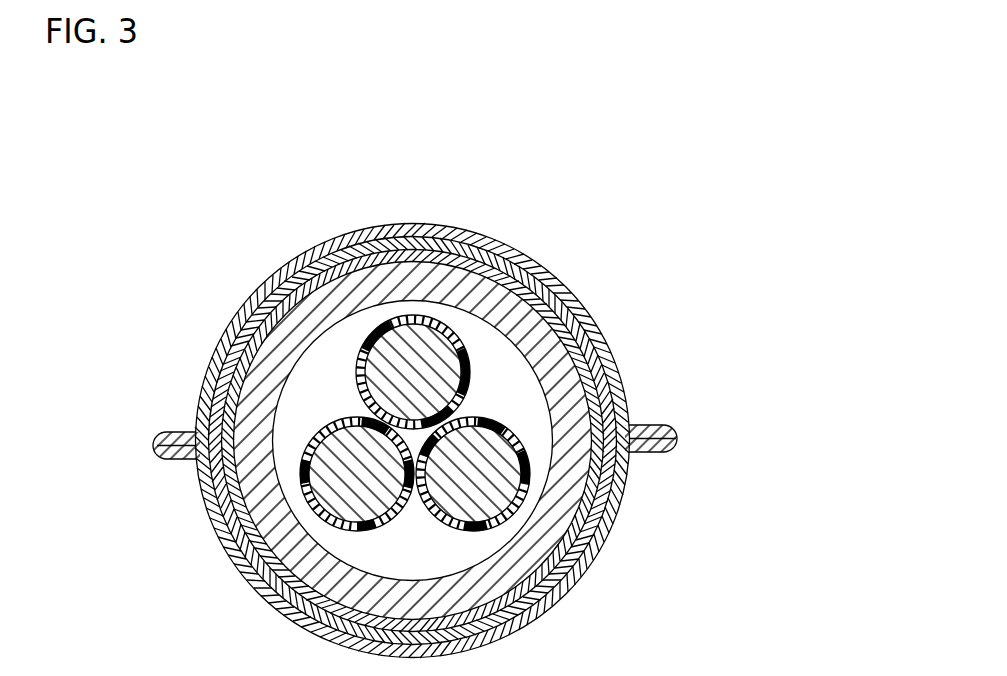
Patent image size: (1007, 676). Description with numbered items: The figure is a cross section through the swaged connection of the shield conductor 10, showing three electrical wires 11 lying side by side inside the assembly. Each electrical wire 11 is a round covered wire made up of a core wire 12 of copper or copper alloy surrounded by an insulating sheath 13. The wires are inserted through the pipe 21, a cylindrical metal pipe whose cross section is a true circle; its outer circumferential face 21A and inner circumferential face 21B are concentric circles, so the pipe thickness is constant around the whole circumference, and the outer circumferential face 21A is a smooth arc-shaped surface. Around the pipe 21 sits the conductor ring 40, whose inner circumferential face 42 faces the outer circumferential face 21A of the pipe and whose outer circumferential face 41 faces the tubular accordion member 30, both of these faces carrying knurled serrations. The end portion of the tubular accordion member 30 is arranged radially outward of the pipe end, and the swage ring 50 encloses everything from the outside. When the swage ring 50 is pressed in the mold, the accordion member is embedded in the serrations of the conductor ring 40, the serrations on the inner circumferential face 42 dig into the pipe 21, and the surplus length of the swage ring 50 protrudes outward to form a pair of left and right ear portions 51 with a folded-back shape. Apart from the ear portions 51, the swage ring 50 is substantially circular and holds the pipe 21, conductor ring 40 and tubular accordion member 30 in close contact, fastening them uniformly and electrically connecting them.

The shield conductor 10 is at (253, 216).
The electrical wire 11 is at (522, 158).
The core wire 12 is at (413, 357).
The insulating sheath 13 is at (458, 332).
The pipe 21 is at (430, 158).
The outer circumferential face 21A is at (335, 260).
The inner circumferential face 21B is at (378, 300).
The tubular accordion member 30 is at (573, 317).
The conductor ring 40 is at (465, 441).
The outer circumferential face 41 is at (600, 512).
The inner circumferential face 42 is at (562, 540).
The swage ring 50 is at (610, 355).
The ear portion 51 is at (176, 432).